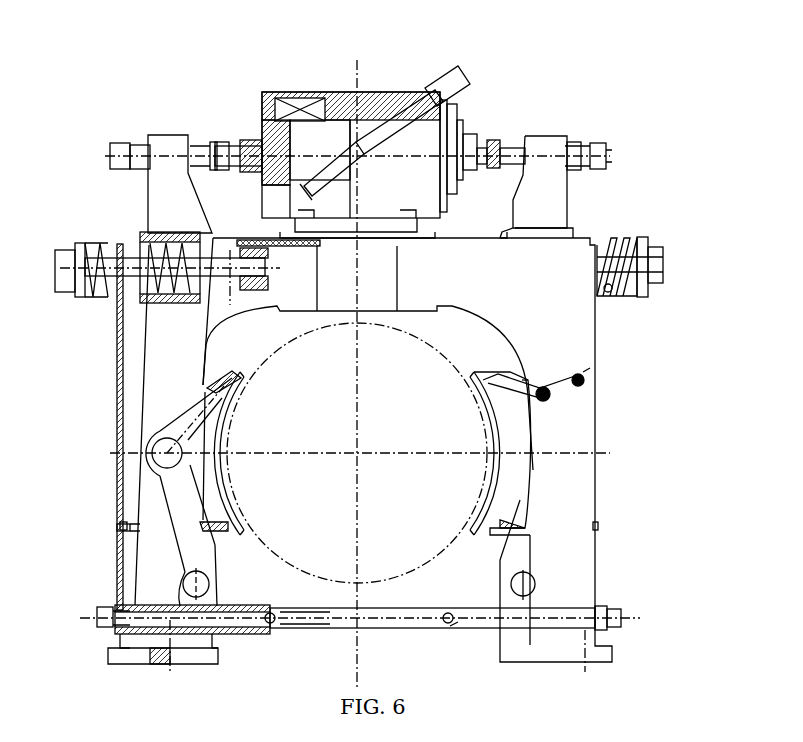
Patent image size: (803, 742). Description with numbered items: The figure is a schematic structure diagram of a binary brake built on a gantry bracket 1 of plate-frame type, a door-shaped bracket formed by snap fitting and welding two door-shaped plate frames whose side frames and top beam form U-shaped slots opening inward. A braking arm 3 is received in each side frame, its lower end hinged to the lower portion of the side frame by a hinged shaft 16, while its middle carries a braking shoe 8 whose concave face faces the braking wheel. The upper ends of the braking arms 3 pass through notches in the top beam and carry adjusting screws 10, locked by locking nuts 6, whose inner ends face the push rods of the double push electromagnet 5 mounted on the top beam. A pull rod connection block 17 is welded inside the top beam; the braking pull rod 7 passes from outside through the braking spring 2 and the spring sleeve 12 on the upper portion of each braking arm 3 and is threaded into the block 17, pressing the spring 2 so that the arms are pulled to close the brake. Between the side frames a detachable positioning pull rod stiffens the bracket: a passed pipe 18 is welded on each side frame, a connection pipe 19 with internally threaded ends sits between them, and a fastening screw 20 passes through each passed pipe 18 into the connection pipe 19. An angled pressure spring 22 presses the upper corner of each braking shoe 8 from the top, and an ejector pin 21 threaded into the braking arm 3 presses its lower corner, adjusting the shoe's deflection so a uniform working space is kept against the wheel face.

The gantry bracket 1 is at (578, 415).
The braking spring 2 is at (663, 275).
The braking arm 3 is at (548, 222).
The double push electromagnet 5 is at (420, 133).
The locking nut 6 is at (140, 145).
The braking pull rod 7 is at (100, 245).
The braking shoe 8 is at (507, 487).
The adjusting screw 10 is at (211, 248).
The spring sleeve 12 is at (158, 236).
The hinged shaft 16 is at (125, 528).
The pull rod connection block 17 is at (258, 247).
The passed pipe 18 is at (147, 607).
The connection pipe 19 is at (500, 618).
The fastening screw 20 is at (103, 608).
The ejector pin 21 is at (200, 522).
The angled pressure spring 22 is at (525, 385).